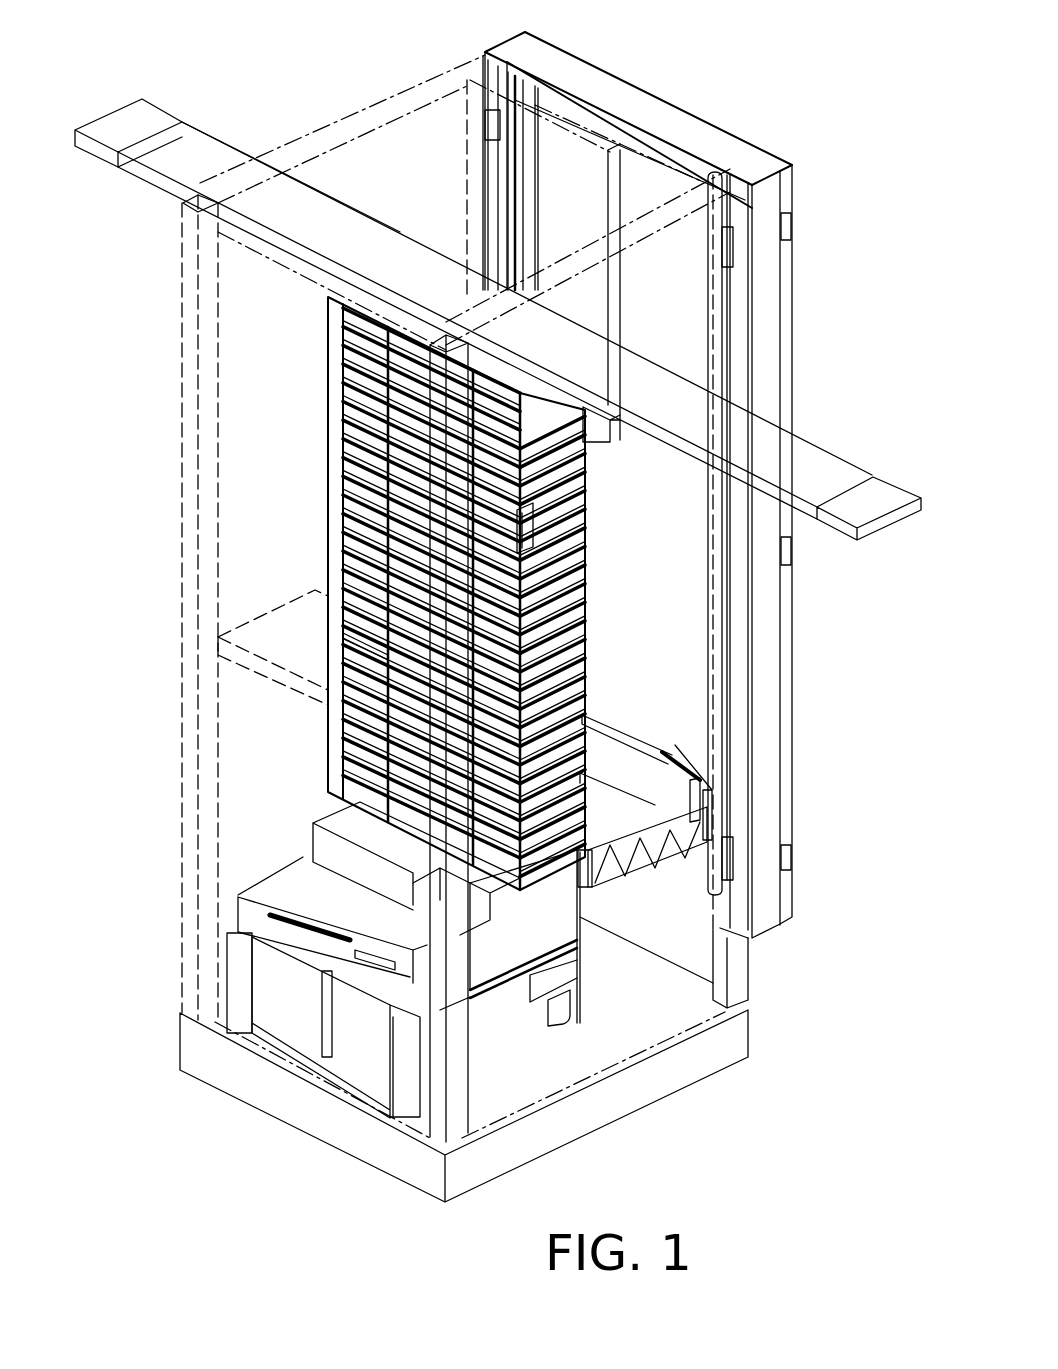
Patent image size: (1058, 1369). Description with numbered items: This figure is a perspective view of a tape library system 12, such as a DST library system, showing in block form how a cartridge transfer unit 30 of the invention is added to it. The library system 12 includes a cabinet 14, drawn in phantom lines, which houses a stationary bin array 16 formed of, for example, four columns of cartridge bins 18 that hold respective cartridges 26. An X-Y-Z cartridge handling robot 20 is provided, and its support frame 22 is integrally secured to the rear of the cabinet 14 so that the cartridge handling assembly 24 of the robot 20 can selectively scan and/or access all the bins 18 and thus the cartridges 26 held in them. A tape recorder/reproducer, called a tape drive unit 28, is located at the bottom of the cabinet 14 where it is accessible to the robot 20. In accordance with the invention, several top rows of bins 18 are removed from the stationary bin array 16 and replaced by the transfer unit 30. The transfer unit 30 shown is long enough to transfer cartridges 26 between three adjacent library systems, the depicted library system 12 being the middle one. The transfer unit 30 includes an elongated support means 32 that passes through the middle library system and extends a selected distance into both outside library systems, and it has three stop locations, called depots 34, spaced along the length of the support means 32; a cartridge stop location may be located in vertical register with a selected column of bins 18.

The tape library system 12 is at (160, 821).
The cabinet 14 is at (180, 616).
The stationary bin array 16 is at (312, 553).
The cartridge bins 18 is at (403, 622).
The X-Y-Z cartridge handling robot 20 is at (698, 668).
The support frame 22 is at (767, 675).
The cartridge handling assembly 24 is at (645, 800).
The cartridges 26 is at (847, 530).
The tape drive unit 28 is at (280, 878).
The transfer unit 30 is at (733, 426).
The support means 32 is at (817, 443).
The depots 34 is at (188, 97).